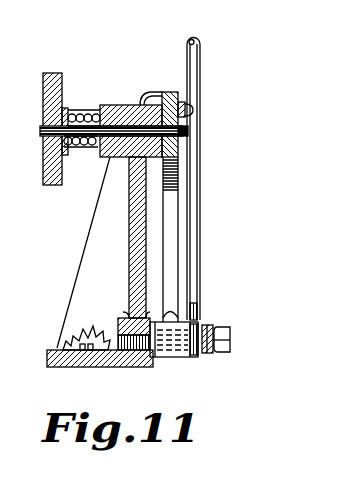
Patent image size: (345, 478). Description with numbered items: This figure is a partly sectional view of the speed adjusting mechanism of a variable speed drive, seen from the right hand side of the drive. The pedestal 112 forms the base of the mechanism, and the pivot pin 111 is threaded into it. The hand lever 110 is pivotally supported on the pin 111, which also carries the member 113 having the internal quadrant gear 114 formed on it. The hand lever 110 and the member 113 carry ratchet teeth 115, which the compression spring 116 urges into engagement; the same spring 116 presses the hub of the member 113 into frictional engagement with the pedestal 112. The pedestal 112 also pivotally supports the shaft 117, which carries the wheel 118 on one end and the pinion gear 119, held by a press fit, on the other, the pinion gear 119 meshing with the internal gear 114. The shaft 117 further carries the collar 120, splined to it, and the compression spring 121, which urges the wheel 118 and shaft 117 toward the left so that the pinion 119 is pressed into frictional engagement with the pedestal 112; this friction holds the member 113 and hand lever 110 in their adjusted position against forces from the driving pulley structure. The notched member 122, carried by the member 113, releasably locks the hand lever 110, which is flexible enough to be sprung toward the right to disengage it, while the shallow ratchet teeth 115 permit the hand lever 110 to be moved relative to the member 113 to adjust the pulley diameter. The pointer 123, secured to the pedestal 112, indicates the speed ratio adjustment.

The hand lever 110 is at (200, 88).
The pivot pin 111 is at (231, 342).
The pedestal 112 is at (47, 356).
The member 113 is at (173, 272).
The internal quadrant gear 114 is at (196, 102).
The ratchet teeth 115 is at (183, 358).
The compression spring 116 is at (208, 327).
The shaft 117 is at (42, 130).
The wheel 118 is at (43, 82).
The pinion gear 119 is at (180, 136).
The collar 120 is at (101, 112).
The compression spring 121 is at (70, 148).
The notched member 122 is at (188, 122).
The pointer 123 is at (153, 92).